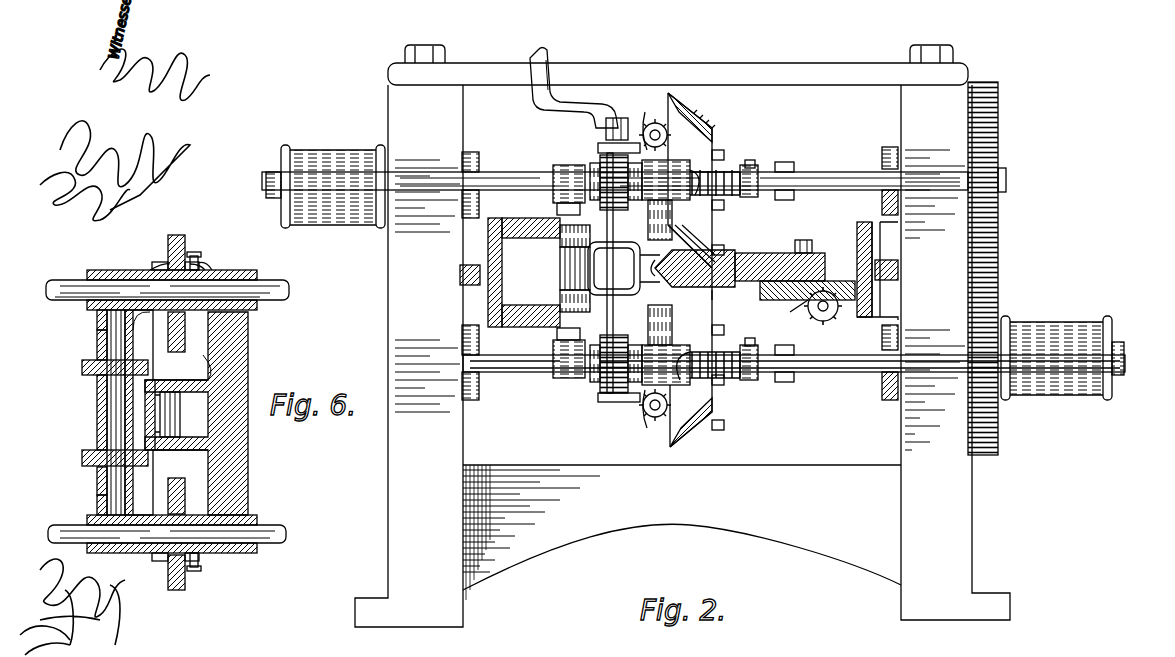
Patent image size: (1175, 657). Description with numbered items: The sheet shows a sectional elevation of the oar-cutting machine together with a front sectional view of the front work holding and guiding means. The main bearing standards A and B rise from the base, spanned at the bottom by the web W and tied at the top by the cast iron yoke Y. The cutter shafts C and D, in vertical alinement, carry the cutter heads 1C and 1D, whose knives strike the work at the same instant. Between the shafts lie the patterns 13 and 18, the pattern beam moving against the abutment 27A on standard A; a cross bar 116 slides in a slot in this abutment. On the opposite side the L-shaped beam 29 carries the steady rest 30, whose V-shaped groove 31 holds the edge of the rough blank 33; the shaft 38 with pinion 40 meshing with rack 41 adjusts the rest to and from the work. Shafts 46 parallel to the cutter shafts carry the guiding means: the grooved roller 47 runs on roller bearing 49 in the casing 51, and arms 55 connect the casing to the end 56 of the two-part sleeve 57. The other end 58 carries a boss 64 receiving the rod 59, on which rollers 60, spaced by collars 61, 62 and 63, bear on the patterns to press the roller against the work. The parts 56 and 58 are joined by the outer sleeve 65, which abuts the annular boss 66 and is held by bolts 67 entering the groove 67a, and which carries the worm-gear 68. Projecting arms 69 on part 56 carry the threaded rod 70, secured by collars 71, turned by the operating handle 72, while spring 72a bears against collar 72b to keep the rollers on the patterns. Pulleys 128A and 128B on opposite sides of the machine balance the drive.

In FIG. 2, the cutter head 1C is at (712, 150).
In FIG. 2, the cutter head 1D is at (712, 420).
In FIG. 2, the pattern 13 is at (500, 210).
In FIG. 2, the pattern 18 is at (535, 208).
In FIG. 2, the abutment 27A is at (462, 265).
In FIG. 2, the L-shaped beam 29 is at (860, 222).
In FIG. 2, the steady rest 30 is at (803, 240).
In FIG. 2, the V-shaped groove 31 is at (778, 238).
In FIG. 2, the rough blank 33 is at (700, 250).
In FIG. 2, the shaft 38 is at (836, 316).
In FIG. 2, the pinion 40 is at (782, 317).
In FIG. 2, the rack 41 is at (770, 300).
In FIG. 6, the shaft 46 is at (290, 290).
In FIG. 2, the shaft 46 is at (820, 172).
In FIG. 2, the roller 47 is at (690, 240).
In FIG. 6, the roller bearing 49 is at (180, 402).
In FIG. 6, the casing 51 is at (180, 420).
In FIG. 2, the casing 51 is at (624, 268).
In FIG. 6, the arm 55 is at (248, 345).
In FIG. 2, the arm 55 is at (700, 330).
In FIG. 6, the sleeve end 56 is at (250, 270).
In FIG. 6, the two part sleeve 57 is at (160, 262).
In FIG. 2, the two part sleeve 57 is at (560, 165).
In FIG. 6, the sleeve end 58 is at (97, 270).
In FIG. 6, the rod 59 is at (107, 412).
In FIG. 6, the roller 60 is at (82, 367).
In FIG. 2, the roller 60 is at (565, 262).
In FIG. 6, the collar 61 is at (97, 345).
In FIG. 6, the collar 62 is at (97, 482).
In FIG. 6, the collar 63 is at (97, 392).
In FIG. 6, the boss 64 is at (97, 320).
In FIG. 6, the outer sleeve 65 is at (160, 264).
In FIG. 6, the annular boss 66 is at (212, 265).
In FIG. 6, the bolt 67 is at (198, 258).
In FIG. 6, the groove 67a is at (195, 312).
In FIG. 6, the gear 68 is at (185, 240).
In FIG. 2, the projecting arm 69 is at (648, 125).
In FIG. 2, the rod 70 is at (604, 160).
In FIG. 2, the collar 71 is at (604, 402).
In FIG. 2, the operating handle 72 is at (548, 52).
In FIG. 2, the spring 72a is at (690, 385).
In FIG. 2, the collar 72b is at (748, 380).
In FIG. 2, the cross bar 116 is at (470, 285).
In FIG. 2, the pulley 128A is at (300, 145).
In FIG. 2, the pulley 128B is at (1050, 322).
In FIG. 2, the main bearing standard A is at (409, 356).
In FIG. 2, the main bearing standard B is at (955, 352).
In FIG. 2, the cutter shaft C is at (266, 185).
In FIG. 2, the cutter shaft D is at (1124, 358).
In FIG. 2, the web W is at (682, 532).
In FIG. 2, the yoke Y is at (770, 60).